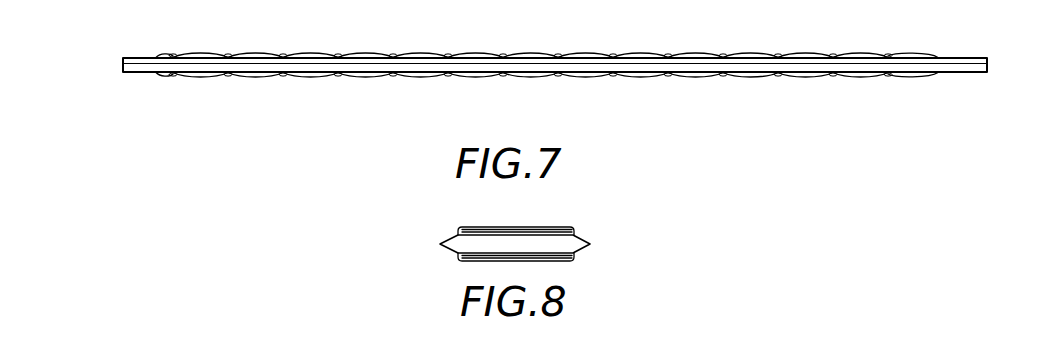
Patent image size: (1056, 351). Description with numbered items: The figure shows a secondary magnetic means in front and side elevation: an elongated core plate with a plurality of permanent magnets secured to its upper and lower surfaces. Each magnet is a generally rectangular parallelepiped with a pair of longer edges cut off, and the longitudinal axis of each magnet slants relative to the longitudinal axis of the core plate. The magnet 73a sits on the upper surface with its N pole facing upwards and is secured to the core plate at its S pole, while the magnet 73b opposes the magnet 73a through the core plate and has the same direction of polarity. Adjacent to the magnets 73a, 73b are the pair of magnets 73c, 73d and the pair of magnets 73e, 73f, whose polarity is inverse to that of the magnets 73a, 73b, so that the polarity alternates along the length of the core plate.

The permanent magnet 73a is at (582, 48).
The permanent magnet 73b is at (585, 82).
The permanent magnet 73c is at (647, 48).
The permanent magnet 73d is at (647, 82).
The permanent magnet 73e is at (535, 52).
The permanent magnet 73f is at (532, 82).